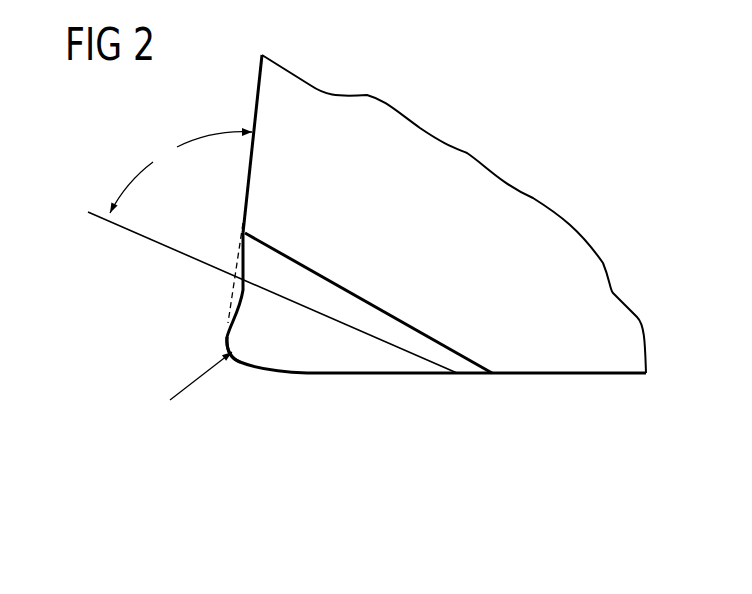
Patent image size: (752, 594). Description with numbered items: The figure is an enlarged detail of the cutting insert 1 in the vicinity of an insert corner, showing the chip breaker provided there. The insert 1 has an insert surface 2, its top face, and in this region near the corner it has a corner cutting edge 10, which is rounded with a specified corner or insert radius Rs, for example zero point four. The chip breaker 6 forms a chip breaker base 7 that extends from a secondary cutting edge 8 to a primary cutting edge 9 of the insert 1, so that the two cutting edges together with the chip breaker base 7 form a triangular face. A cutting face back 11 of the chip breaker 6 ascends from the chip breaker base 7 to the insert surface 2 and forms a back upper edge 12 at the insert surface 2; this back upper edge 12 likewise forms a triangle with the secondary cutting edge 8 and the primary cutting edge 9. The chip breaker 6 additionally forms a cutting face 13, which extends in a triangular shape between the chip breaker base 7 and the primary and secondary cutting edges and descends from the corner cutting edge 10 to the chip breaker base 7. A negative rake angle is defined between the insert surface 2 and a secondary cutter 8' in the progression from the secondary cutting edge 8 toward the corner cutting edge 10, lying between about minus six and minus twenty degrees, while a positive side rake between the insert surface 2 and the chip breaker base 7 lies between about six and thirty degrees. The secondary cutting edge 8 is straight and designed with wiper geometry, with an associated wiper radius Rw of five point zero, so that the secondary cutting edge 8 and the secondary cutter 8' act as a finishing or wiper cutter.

The insert 1 is at (535, 198).
The insert surface 2 is at (382, 145).
The chip breaker 6 is at (272, 273).
The chip breaker base 7 is at (375, 333).
The secondary cutting edge 8 is at (476, 413).
The secondary cutter 8' is at (287, 446).
The primary cutting edge 9 is at (227, 297).
The corner cutting edge 10 is at (223, 337).
The cutting face back 11 is at (338, 303).
The back upper edge 12 is at (317, 270).
The cutting face 13 is at (292, 342).
The corner radius Rs is at (195, 385).
The wiper radius Rw is at (321, 509).